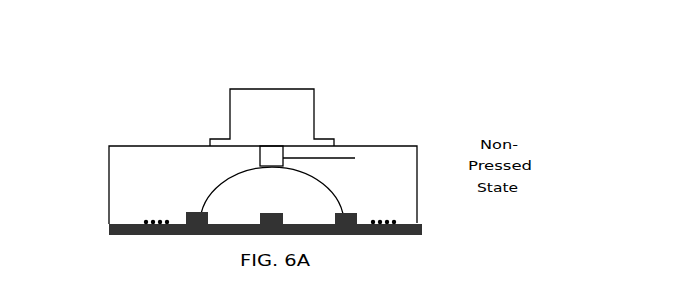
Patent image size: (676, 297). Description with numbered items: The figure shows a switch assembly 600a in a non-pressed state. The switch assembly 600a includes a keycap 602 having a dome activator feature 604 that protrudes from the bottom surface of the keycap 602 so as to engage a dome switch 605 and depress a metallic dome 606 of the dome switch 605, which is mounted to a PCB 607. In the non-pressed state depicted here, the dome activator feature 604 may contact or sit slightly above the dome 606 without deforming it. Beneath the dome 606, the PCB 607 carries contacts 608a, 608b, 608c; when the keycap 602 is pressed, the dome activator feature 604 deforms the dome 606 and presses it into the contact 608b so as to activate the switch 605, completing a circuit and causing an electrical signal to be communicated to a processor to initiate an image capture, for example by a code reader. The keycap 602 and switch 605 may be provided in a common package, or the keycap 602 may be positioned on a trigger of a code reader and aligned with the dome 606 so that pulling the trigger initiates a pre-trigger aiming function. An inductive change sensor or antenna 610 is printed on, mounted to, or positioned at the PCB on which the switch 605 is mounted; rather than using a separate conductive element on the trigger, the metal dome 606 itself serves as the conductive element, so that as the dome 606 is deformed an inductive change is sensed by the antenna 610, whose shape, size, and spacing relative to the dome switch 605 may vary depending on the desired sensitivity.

The switch assembly 600a is at (255, 70).
The keycap 602 is at (229, 99).
The dome activator feature 604 is at (355, 158).
The dome switch 605 is at (199, 174).
The metallic dome 606 is at (336, 191).
The PCB 607 is at (108, 228).
The contact 608a is at (186, 234).
The contact 608b is at (254, 216).
The contact 608c is at (358, 216).
The inductive change sensor or antenna 610 is at (139, 229).